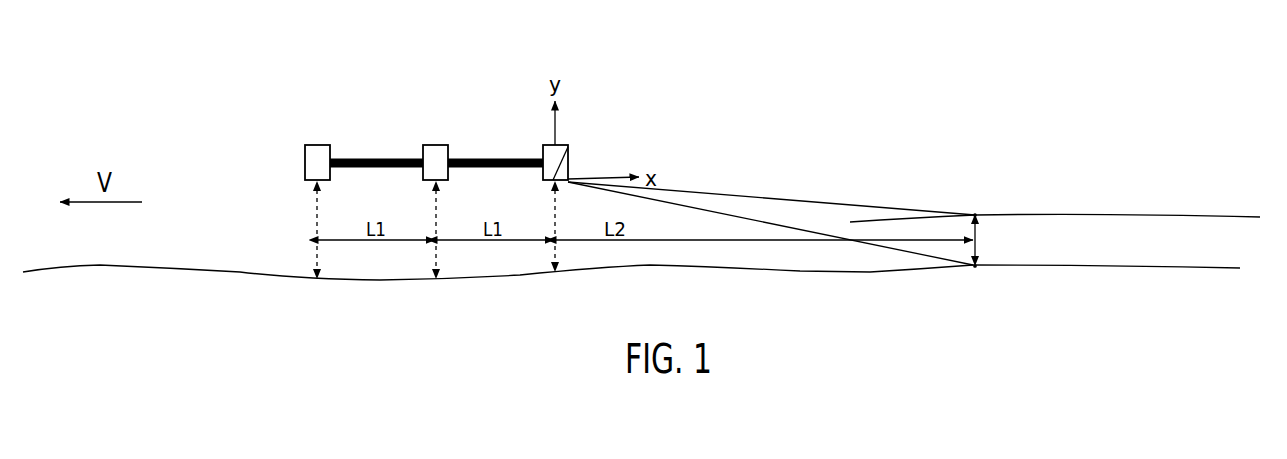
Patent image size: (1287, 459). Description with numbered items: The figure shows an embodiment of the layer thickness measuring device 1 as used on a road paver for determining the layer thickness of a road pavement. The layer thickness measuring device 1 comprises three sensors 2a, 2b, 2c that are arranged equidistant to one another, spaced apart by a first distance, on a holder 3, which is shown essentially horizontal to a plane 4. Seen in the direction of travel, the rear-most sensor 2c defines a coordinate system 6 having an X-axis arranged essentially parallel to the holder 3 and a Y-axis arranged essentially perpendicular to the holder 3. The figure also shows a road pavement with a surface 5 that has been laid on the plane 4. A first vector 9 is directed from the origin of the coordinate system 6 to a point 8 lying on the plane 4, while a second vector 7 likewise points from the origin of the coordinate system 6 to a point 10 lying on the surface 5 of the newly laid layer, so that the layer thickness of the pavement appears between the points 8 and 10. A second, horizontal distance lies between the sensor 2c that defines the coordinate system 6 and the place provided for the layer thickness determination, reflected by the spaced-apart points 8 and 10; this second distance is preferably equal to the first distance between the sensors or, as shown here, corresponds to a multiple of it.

The layer thickness measuring device 1 is at (206, 146).
The sensor 2a is at (313, 145).
The sensor 2b is at (436, 145).
The sensor 2c is at (545, 146).
The holder 3 is at (368, 158).
The plane 4 is at (240, 272).
The surface 5 is at (1070, 212).
The coordinate system 6 is at (568, 147).
The second vector 7 is at (752, 196).
The point 8 is at (975, 268).
The first vector 9 is at (810, 230).
The point 10 is at (976, 214).